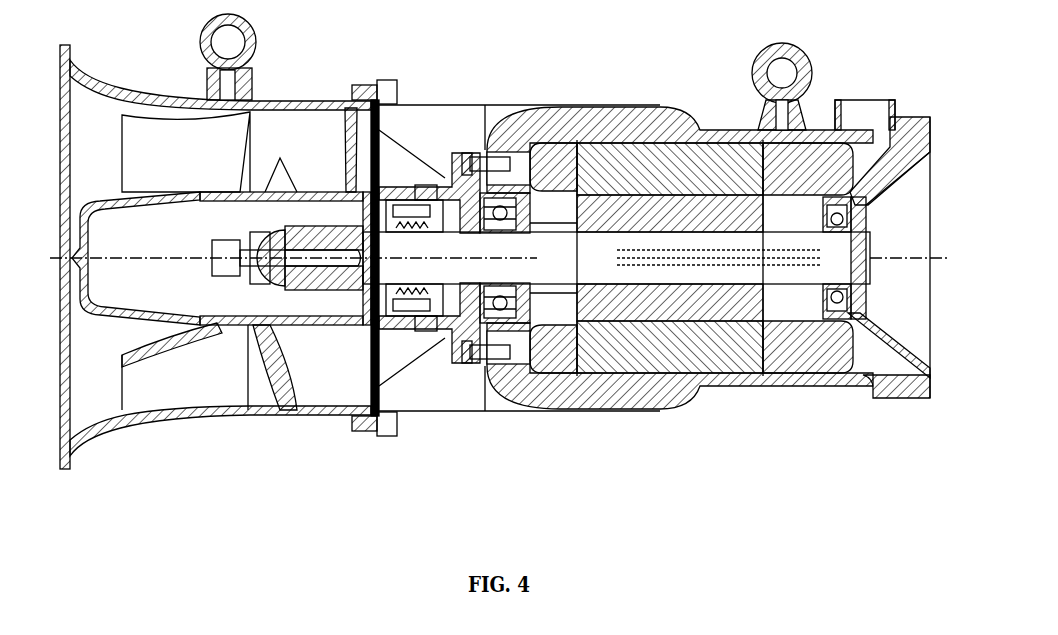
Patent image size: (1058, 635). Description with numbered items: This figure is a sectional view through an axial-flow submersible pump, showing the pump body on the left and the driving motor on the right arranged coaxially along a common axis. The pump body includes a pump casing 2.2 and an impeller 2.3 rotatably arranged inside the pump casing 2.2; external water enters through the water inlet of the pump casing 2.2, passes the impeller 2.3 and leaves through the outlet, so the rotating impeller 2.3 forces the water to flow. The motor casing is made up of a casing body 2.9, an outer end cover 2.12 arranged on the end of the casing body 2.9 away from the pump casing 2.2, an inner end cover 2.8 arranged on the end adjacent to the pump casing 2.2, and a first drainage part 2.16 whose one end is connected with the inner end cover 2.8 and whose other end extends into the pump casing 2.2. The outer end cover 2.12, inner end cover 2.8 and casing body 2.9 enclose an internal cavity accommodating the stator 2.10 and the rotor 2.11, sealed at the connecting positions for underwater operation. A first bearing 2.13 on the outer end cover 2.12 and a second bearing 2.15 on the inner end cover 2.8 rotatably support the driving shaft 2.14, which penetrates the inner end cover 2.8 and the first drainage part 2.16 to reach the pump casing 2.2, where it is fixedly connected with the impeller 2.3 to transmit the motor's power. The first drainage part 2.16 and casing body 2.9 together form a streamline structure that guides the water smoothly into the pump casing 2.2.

The pump casing 2.2 is at (85, 382).
The impeller 2.3 is at (187, 135).
The inner end cover 2.8 is at (462, 175).
The casing body 2.9 is at (577, 130).
The stator 2.10 is at (648, 165).
The rotor 2.11 is at (738, 200).
The outer end cover 2.12 is at (922, 120).
The first bearing 2.13 is at (840, 380).
The driving shaft 2.14 is at (688, 272).
The second bearing 2.15 is at (507, 385).
The first drainage part 2.16 is at (422, 330).